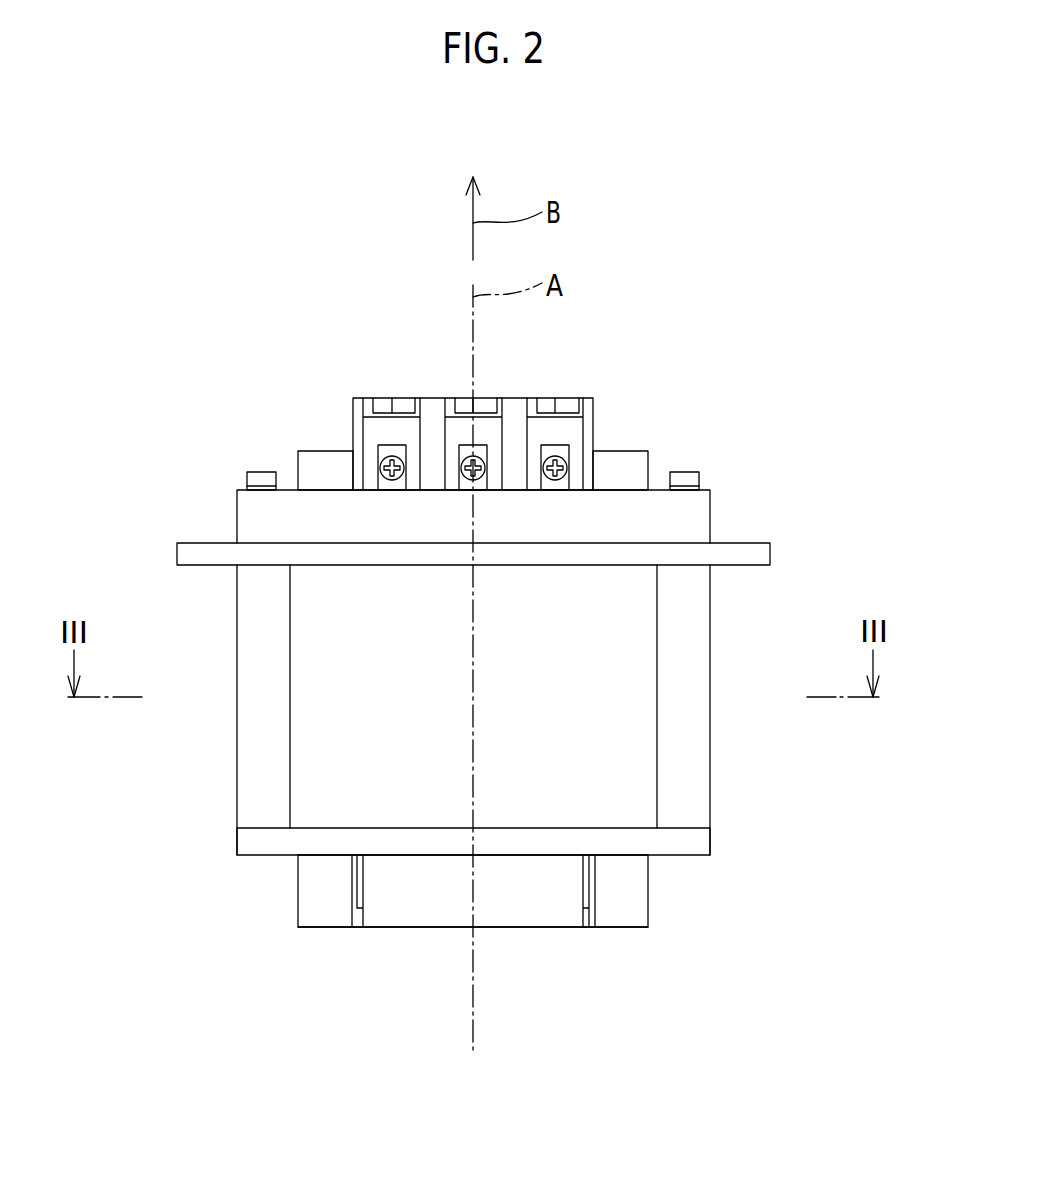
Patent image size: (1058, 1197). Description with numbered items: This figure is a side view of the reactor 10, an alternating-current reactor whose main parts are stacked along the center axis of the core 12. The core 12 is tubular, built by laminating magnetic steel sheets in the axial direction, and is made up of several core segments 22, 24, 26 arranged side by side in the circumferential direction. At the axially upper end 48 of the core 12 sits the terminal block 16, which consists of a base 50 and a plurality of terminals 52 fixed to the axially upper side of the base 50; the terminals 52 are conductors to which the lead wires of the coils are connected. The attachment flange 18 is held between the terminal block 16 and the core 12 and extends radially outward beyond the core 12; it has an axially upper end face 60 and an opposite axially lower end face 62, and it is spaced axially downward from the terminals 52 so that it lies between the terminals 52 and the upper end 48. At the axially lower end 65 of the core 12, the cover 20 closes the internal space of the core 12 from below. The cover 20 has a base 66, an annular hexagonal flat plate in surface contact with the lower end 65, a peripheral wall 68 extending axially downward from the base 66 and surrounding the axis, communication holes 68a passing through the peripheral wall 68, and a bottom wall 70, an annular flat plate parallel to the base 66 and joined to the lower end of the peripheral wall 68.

The reactor 10 is at (786, 197).
The core 12 is at (210, 745).
The terminal block 16 is at (731, 498).
The attachment flange 18 is at (771, 550).
The cover 20 is at (673, 898).
The core segment 22 is at (451, 727).
The core segment 24 is at (701, 727).
The core segment 26 is at (281, 727).
The axially upper end 48 is at (258, 563).
The base 50 is at (236, 518).
The terminal 52 is at (454, 433).
The axially upper end face 60 is at (757, 543).
The axially lower end face 62 is at (753, 565).
The axially lower end 65 is at (263, 829).
The base 66 is at (697, 843).
The peripheral wall 68 is at (441, 902).
The communication hole 68a is at (363, 893).
The bottom wall 70 is at (405, 928).